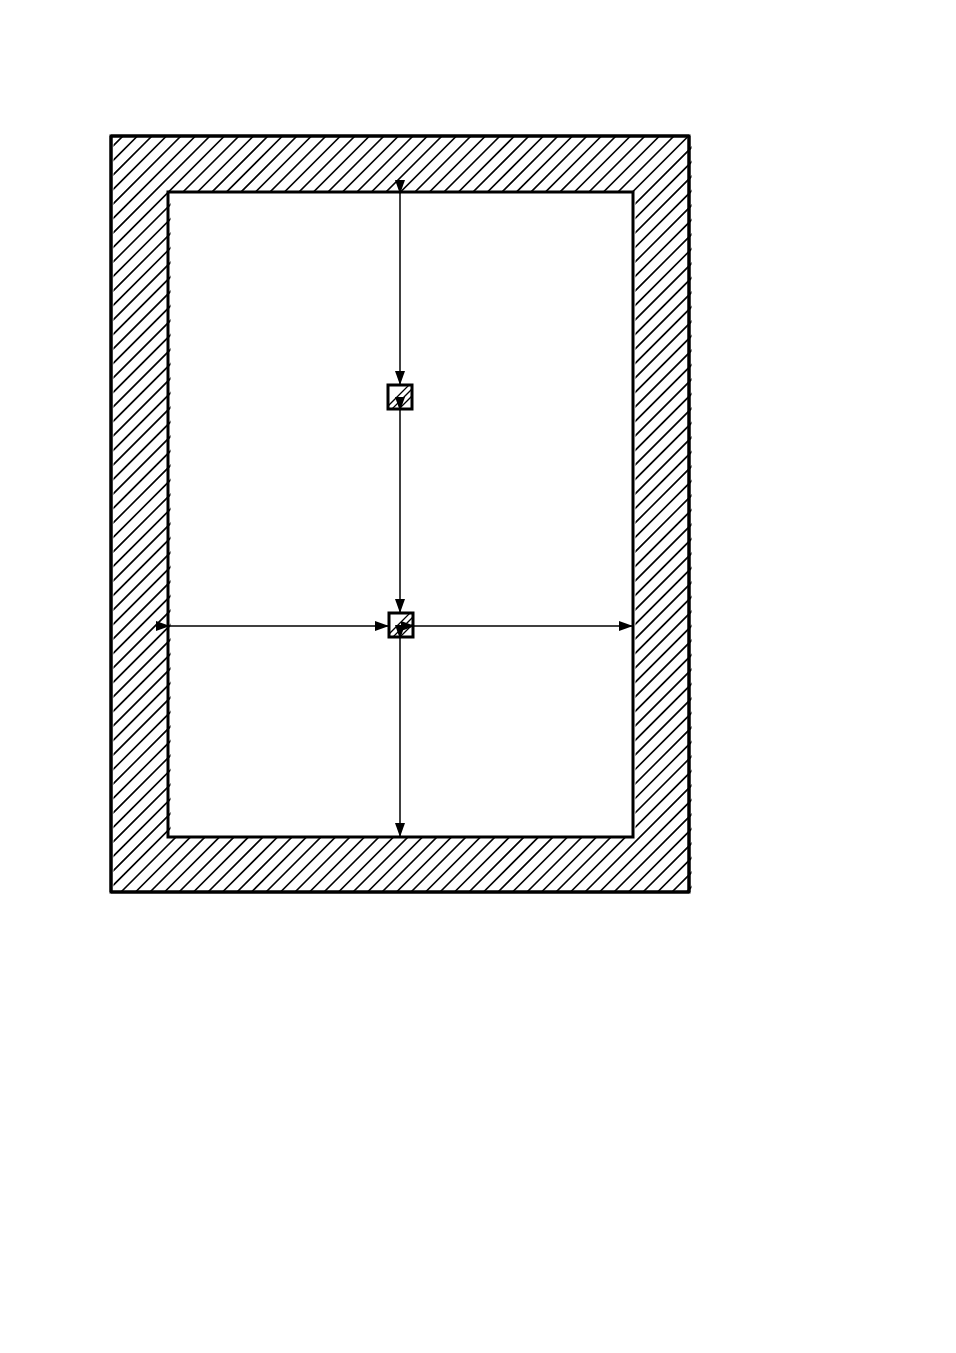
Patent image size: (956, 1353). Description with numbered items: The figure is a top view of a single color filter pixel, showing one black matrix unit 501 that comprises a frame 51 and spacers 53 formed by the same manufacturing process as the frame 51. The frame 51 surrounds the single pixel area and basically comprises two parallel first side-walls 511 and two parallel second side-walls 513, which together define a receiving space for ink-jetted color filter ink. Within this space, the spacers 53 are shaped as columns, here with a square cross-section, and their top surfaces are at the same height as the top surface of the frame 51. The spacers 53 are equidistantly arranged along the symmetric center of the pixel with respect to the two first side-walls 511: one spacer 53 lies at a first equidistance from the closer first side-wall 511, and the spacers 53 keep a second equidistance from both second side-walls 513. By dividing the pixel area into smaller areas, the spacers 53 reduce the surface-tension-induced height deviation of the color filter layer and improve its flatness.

The black matrix unit 501 is at (712, 104).
The frame 51 is at (123, 136).
The first side-walls 511 is at (390, 136).
The second side-walls 513 is at (110, 438).
The spacer 53 is at (386, 400).